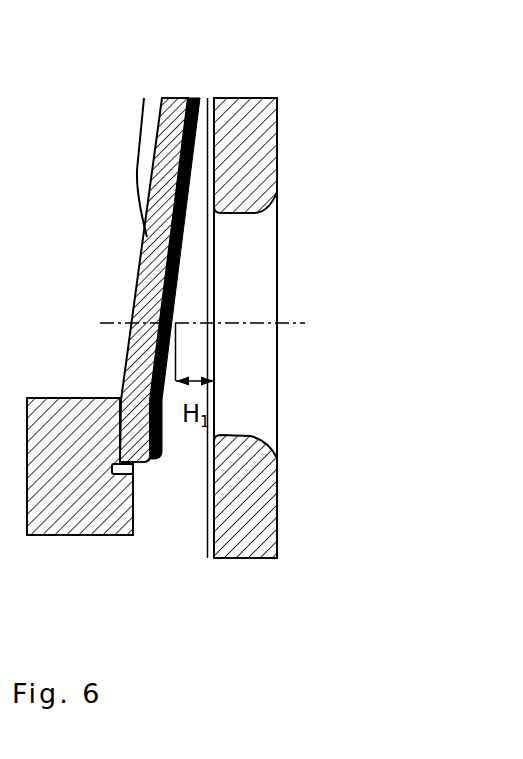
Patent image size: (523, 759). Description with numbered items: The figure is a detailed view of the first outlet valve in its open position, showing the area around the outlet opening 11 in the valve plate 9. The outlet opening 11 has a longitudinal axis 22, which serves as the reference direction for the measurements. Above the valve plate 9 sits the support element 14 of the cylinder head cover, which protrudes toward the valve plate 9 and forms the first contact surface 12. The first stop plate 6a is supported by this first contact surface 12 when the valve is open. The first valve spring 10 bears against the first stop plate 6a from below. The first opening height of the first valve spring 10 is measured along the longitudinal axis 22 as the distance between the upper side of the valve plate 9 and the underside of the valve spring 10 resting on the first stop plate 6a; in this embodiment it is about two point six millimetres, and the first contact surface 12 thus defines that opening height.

The first stop plate 6a is at (152, 242).
The valve plate 9 is at (253, 168).
The first valve spring 10 is at (168, 288).
The outlet opening 11 is at (250, 407).
The first contact surface 12 is at (125, 437).
The support element 14 is at (50, 507).
The longitudinal axis 22 is at (100, 323).